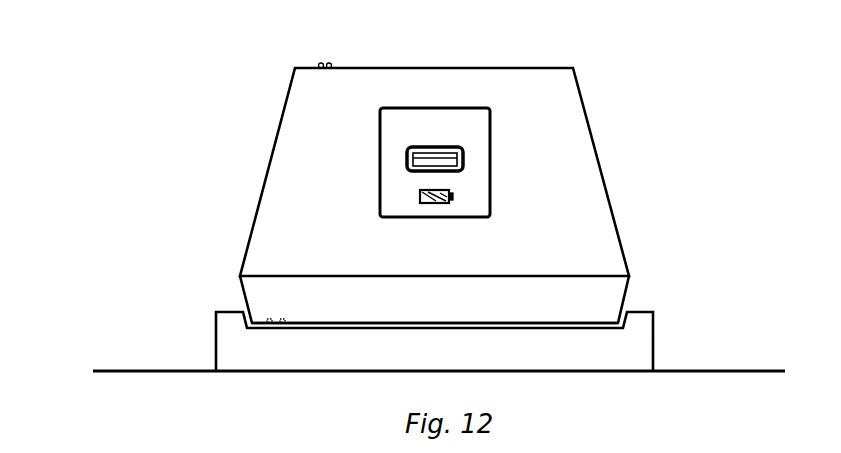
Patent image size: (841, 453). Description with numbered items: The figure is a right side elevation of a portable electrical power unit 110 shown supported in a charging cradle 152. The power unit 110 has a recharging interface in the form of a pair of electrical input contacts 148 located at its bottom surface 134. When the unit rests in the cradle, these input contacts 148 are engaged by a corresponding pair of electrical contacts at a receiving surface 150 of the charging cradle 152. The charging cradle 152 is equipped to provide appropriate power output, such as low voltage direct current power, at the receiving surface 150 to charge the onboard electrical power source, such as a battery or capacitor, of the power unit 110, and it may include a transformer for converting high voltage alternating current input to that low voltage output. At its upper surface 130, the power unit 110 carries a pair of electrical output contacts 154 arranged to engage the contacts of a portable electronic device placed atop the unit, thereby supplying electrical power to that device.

The portable electrical power unit 110 is at (488, 189).
The upper surface 130 is at (441, 64).
The bottom surface 134 is at (391, 338).
The electrical input contacts 148 is at (292, 314).
The receiving surface 150 is at (538, 323).
The charging cradle 152 is at (652, 341).
The electrical output contacts 154 is at (327, 48).